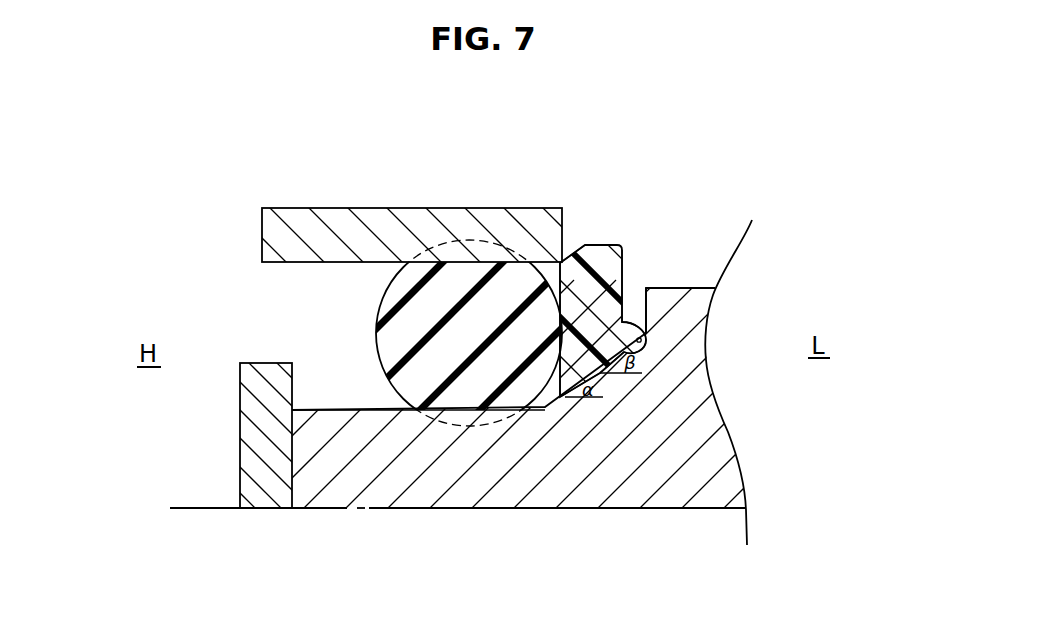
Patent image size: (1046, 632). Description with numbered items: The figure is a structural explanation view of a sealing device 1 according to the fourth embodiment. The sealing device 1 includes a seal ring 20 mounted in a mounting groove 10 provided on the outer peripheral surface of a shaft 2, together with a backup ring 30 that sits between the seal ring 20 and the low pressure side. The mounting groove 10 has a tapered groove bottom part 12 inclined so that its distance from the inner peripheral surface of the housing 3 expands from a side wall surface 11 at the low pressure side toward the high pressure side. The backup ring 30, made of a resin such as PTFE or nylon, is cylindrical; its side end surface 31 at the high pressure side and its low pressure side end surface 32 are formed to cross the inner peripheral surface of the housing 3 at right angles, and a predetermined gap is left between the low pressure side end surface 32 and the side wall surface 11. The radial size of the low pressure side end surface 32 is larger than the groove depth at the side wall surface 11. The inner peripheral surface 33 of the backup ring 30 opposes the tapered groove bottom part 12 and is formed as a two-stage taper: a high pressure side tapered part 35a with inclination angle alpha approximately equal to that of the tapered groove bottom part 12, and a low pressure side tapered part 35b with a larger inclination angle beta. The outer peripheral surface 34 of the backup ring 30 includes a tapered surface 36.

The sealing device 1 is at (278, 301).
The shaft 2 is at (333, 490).
The housing 3 is at (375, 238).
The mounting groove 10 is at (393, 404).
The side wall surface 11 is at (642, 302).
The tapered groove bottom part 12 is at (652, 362).
The seal ring 20 is at (457, 285).
The backup ring 30 is at (590, 300).
The side end surface 31 is at (552, 375).
The low pressure side end surface 32 is at (622, 277).
The inner peripheral surface 33 is at (606, 382).
The outer peripheral surface 34 is at (600, 247).
The high pressure side tapered part 35a is at (598, 378).
The low pressure side tapered part 35b is at (648, 330).
The tapered surface 36 is at (567, 260).